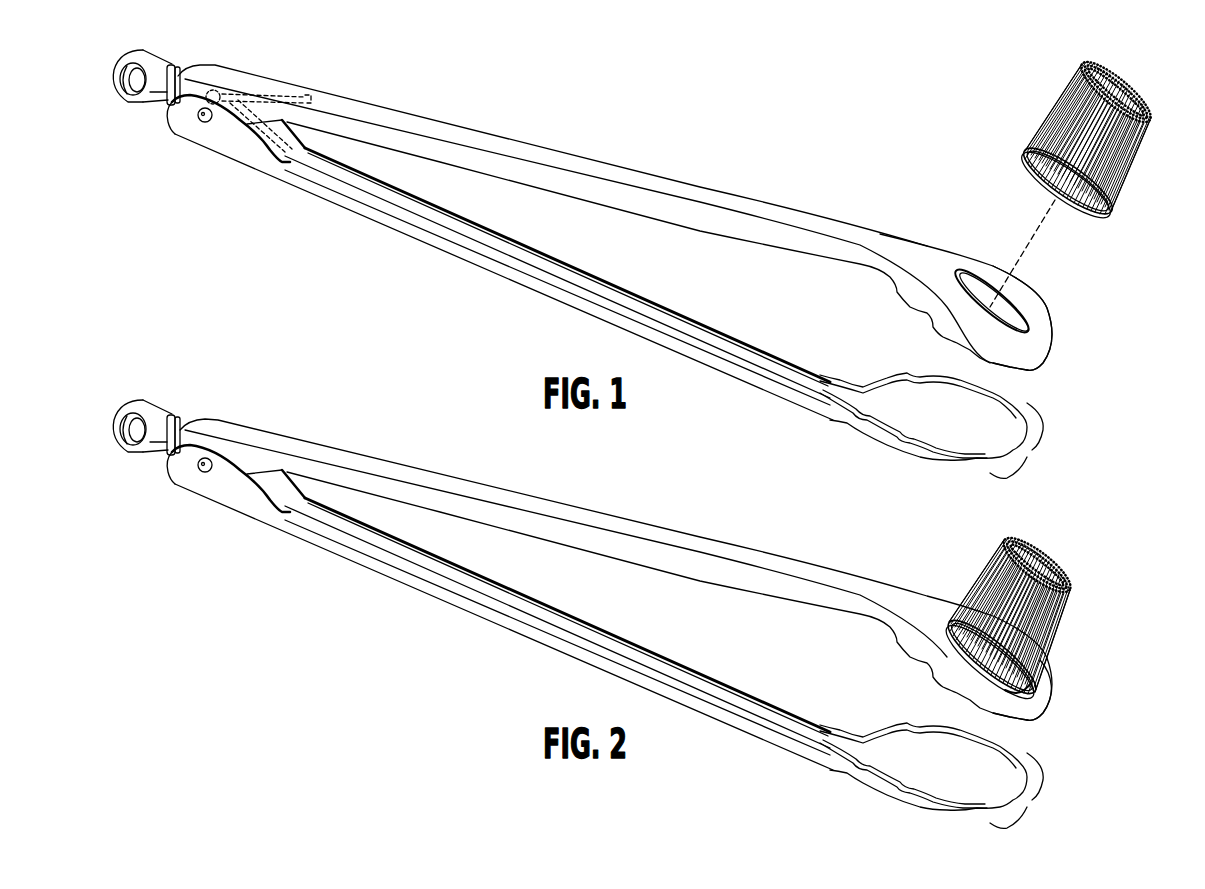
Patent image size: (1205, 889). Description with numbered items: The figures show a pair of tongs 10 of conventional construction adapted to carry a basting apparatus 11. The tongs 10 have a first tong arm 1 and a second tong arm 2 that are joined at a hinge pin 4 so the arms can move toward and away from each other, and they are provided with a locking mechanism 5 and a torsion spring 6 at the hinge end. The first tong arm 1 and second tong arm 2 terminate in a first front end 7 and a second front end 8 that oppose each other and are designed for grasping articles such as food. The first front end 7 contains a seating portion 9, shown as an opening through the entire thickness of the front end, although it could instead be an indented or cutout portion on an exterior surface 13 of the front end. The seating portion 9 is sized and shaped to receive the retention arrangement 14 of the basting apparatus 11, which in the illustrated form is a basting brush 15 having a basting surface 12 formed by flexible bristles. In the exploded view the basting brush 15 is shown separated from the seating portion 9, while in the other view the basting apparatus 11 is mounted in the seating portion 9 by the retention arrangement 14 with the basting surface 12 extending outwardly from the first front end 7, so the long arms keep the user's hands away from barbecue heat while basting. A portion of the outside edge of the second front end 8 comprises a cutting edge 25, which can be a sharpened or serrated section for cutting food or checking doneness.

In FIG. 1, the first tong arm 1 is at (639, 213).
In FIG. 2, the first tong arm 1 is at (659, 580).
In FIG. 1, the second tong arm 2 is at (637, 303).
In FIG. 2, the second tong arm 2 is at (649, 638).
In FIG. 1, the hinge pin 4 is at (200, 116).
In FIG. 2, the hinge pin 4 is at (163, 497).
In FIG. 1, the locking mechanism 5 is at (115, 63).
In FIG. 2, the locking mechanism 5 is at (121, 417).
In FIG. 1, the torsion spring 6 is at (228, 88).
In FIG. 1, the first front end 7 is at (1025, 285).
In FIG. 2, the first front end 7 is at (1065, 706).
In FIG. 1, the second front end 8 is at (948, 442).
In FIG. 2, the second front end 8 is at (960, 777).
In FIG. 1, the seating portion 9 is at (1030, 333).
In FIG. 2, the seating portion 9 is at (1048, 718).
In FIG. 1, the tongs 10 is at (663, 383).
In FIG. 2, the tongs 10 is at (663, 383).
In FIG. 1, the basting apparatus 11 is at (1053, 146).
In FIG. 2, the basting apparatus 11 is at (1004, 606).
In FIG. 1, the basting surface 12 is at (1129, 60).
In FIG. 2, the basting surface 12 is at (1061, 550).
In FIG. 1, the exterior surface 13 is at (929, 245).
In FIG. 1, the retention arrangement 14 is at (1122, 222).
In FIG. 2, the retention arrangement 14 is at (931, 615).
In FIG. 1, the basting brush 15 is at (1151, 180).
In FIG. 2, the basting brush 15 is at (1095, 660).
In FIG. 1, the cutting edge 25 is at (1062, 455).
In FIG. 2, the cutting edge 25 is at (1061, 790).